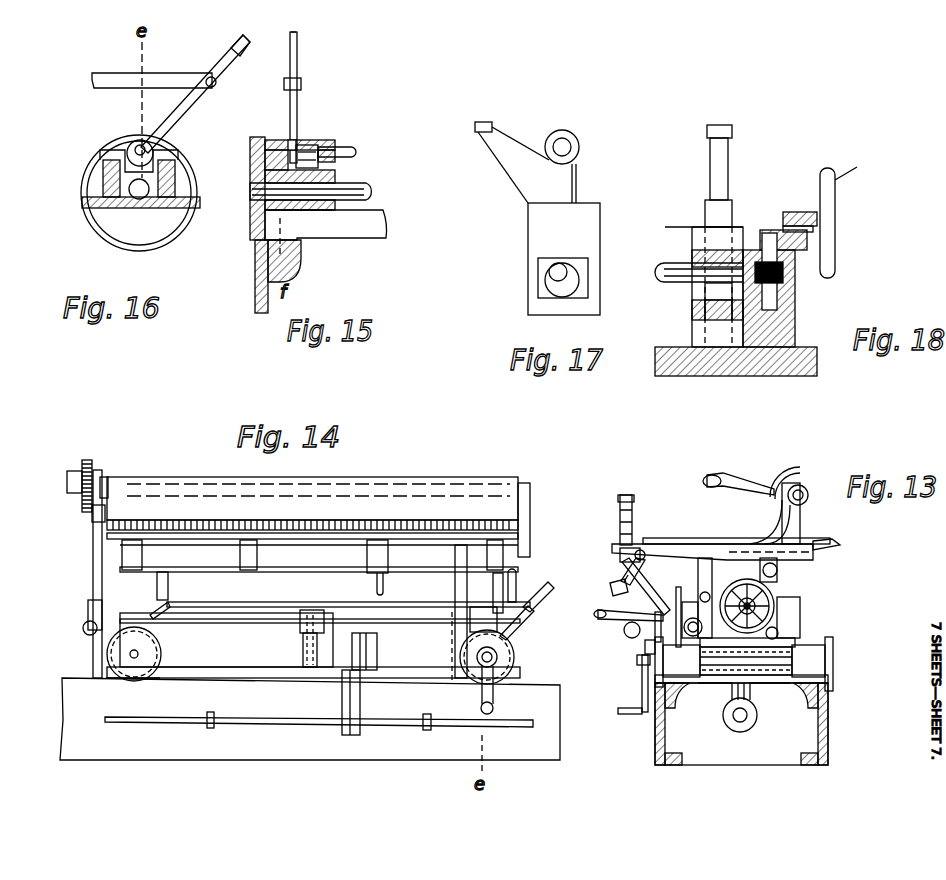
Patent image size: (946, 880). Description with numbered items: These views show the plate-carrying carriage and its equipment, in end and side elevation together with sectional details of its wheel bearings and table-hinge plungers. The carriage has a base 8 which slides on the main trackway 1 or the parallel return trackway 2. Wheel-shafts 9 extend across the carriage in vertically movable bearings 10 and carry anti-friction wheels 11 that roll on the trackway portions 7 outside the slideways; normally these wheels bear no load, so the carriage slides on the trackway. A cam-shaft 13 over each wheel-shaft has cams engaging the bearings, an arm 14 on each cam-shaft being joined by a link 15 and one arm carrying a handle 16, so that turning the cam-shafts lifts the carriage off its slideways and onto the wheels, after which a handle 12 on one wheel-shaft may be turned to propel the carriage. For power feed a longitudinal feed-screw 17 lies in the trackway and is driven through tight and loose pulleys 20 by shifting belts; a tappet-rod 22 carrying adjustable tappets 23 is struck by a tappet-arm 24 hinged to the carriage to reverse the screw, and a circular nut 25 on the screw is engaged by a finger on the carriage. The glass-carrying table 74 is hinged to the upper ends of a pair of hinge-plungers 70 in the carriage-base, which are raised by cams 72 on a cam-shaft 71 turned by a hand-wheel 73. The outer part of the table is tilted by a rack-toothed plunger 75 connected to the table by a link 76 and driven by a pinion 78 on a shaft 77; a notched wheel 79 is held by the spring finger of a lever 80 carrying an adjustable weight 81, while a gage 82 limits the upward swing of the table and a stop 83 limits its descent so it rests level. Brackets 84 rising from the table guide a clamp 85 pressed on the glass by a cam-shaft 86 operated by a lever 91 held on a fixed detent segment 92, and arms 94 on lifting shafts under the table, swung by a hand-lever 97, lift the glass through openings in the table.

In FIG. 14, the main trackway 1 is at (372, 752).
In FIG. 13, the main trackway 1 is at (828, 738).
In FIG. 15, the return trackway 2 is at (256, 278).
In FIG. 15, the trackway portions 7 is at (258, 247).
In FIG. 15, the carriage base 8 is at (387, 238).
In FIG. 14, the carriage base 8 is at (440, 676).
In FIG. 13, the carriage base 8 is at (741, 702).
In FIG. 16, the wheel-shafts 9 is at (136, 197).
In FIG. 15, the wheel-shafts 9 is at (375, 196).
In FIG. 14, the wheel-shafts 9 is at (138, 651).
In FIG. 13, the wheel-shafts 9 is at (832, 667).
In FIG. 16, the vertically movable bearings 10 is at (150, 200).
In FIG. 15, the vertically movable bearings 10 is at (325, 208).
In FIG. 15, the anti-friction wheels 11 is at (252, 226).
In FIG. 14, the anti-friction wheels 11 is at (128, 672).
In FIG. 13, the anti-friction wheels 11 is at (834, 685).
In FIG. 14, the handle 12 is at (494, 708).
In FIG. 13, the handle 12 is at (620, 713).
In FIG. 16, the cam-shaft 13 is at (132, 142).
In FIG. 15, the cam-shaft 13 is at (352, 150).
In FIG. 13, the cam-shaft 13 is at (710, 697).
In FIG. 16, the arm 14 is at (196, 99).
In FIG. 15, the arm 14 is at (298, 122).
In FIG. 14, the arm 14 is at (517, 617).
In FIG. 13, the arm 14 is at (655, 655).
In FIG. 16, the link 15 is at (150, 76).
In FIG. 15, the link 15 is at (302, 84).
In FIG. 14, the link 15 is at (418, 608).
In FIG. 16, the handle 16 is at (240, 44).
In FIG. 15, the handle 16 is at (298, 50).
In FIG. 14, the handle 16 is at (550, 586).
In FIG. 13, the handle 16 is at (612, 590).
In FIG. 13, the longitudinal feed-screw 17 is at (735, 719).
In FIG. 13, the tight and loose pulleys 20 is at (788, 683).
In FIG. 14, the tappet-rod 22 is at (240, 717).
In FIG. 14, the tappets 23 is at (208, 726).
In FIG. 14, the tappet-arm 24 is at (342, 703).
In FIG. 13, the circular nut 25 is at (733, 715).
In FIG. 17, the hinge-plungers 70 is at (578, 176).
In FIG. 18, the hinge-plungers 70 is at (730, 160).
In FIG. 13, the hinge-plungers 70 is at (778, 585).
In FIG. 17, the cam-shaft 71 is at (552, 273).
In FIG. 18, the cam-shaft 71 is at (677, 281).
In FIG. 17, the cams 72 is at (572, 283).
In FIG. 18, the cams 72 is at (720, 277).
In FIG. 13, the hand-wheel 73 is at (800, 610).
In FIG. 13, the glass-carrying table 74 is at (665, 544).
In FIG. 14, the plunger 75 is at (377, 588).
In FIG. 14, the link 76 is at (300, 580).
In FIG. 13, the link 76 is at (698, 580).
In FIG. 14, the shaft 77 is at (320, 611).
In FIG. 14, the pinion 78 is at (338, 640).
In FIG. 14, the notched wheel 79 is at (92, 593).
In FIG. 13, the notched wheel 79 is at (655, 642).
In FIG. 13, the lever 80 is at (598, 620).
In FIG. 14, the weight 81 is at (83, 629).
In FIG. 13, the weight 81 is at (627, 636).
In FIG. 14, the gage 82 is at (92, 514).
In FIG. 13, the gage 82 is at (624, 516).
In FIG. 17, the stop 83 is at (494, 126).
In FIG. 13, the stop 83 is at (743, 577).
In FIG. 14, the brackets 84 is at (526, 523).
In FIG. 13, the brackets 84 is at (787, 526).
In FIG. 13, the clamp 85 is at (815, 543).
In FIG. 13, the cam-shaft 86 is at (803, 490).
In FIG. 13, the lever 91 is at (765, 485).
In FIG. 13, the fixed detent segment 92 is at (796, 472).
In FIG. 13, the arms 94 is at (636, 555).
In FIG. 13, the hand-lever 97 is at (620, 580).